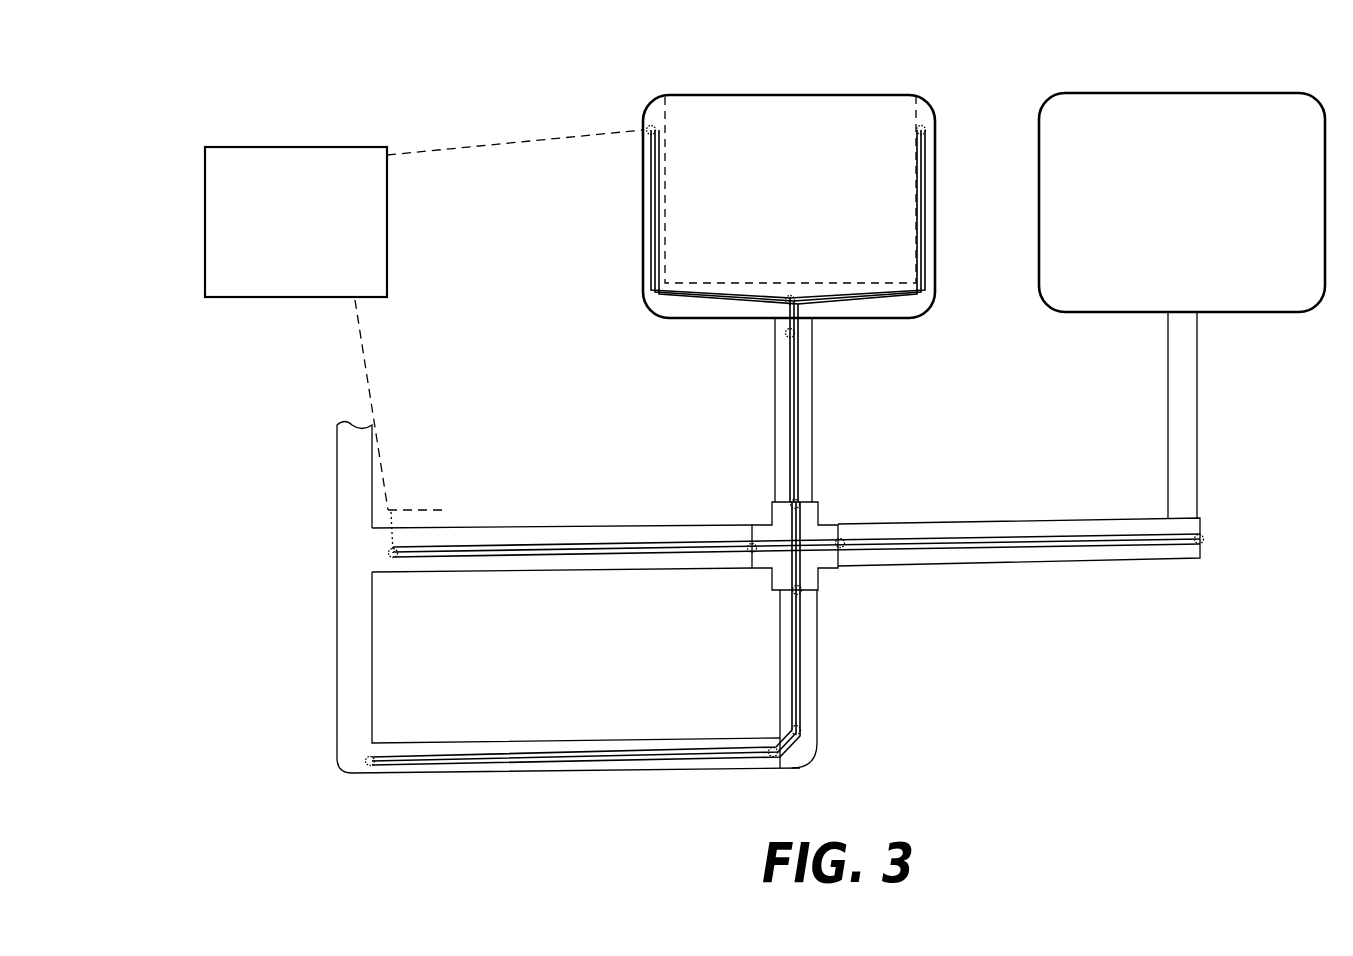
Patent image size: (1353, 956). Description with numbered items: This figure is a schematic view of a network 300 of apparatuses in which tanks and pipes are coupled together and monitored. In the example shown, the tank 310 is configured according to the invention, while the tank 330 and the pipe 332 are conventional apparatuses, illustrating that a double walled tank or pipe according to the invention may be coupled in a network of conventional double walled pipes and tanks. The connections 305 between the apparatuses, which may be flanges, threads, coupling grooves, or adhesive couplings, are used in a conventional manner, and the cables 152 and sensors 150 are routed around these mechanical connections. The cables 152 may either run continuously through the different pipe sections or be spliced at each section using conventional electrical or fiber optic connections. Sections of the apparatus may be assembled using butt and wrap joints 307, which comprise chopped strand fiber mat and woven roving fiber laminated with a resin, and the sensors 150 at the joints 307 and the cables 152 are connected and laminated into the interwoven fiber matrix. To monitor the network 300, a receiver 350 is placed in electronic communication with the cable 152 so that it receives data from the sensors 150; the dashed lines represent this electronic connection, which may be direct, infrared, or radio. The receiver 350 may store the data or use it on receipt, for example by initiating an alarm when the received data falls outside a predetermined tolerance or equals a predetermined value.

The network 300 is at (268, 106).
The receiver 350 is at (277, 229).
The butt and wrap joint 307 is at (439, 523).
The tank 310 is at (772, 201).
The tank 330 is at (1164, 211).
The pipe 332 is at (345, 530).
The connection 305 is at (812, 516).
The cable 152 is at (655, 220).
The sensor 150 is at (651, 126).